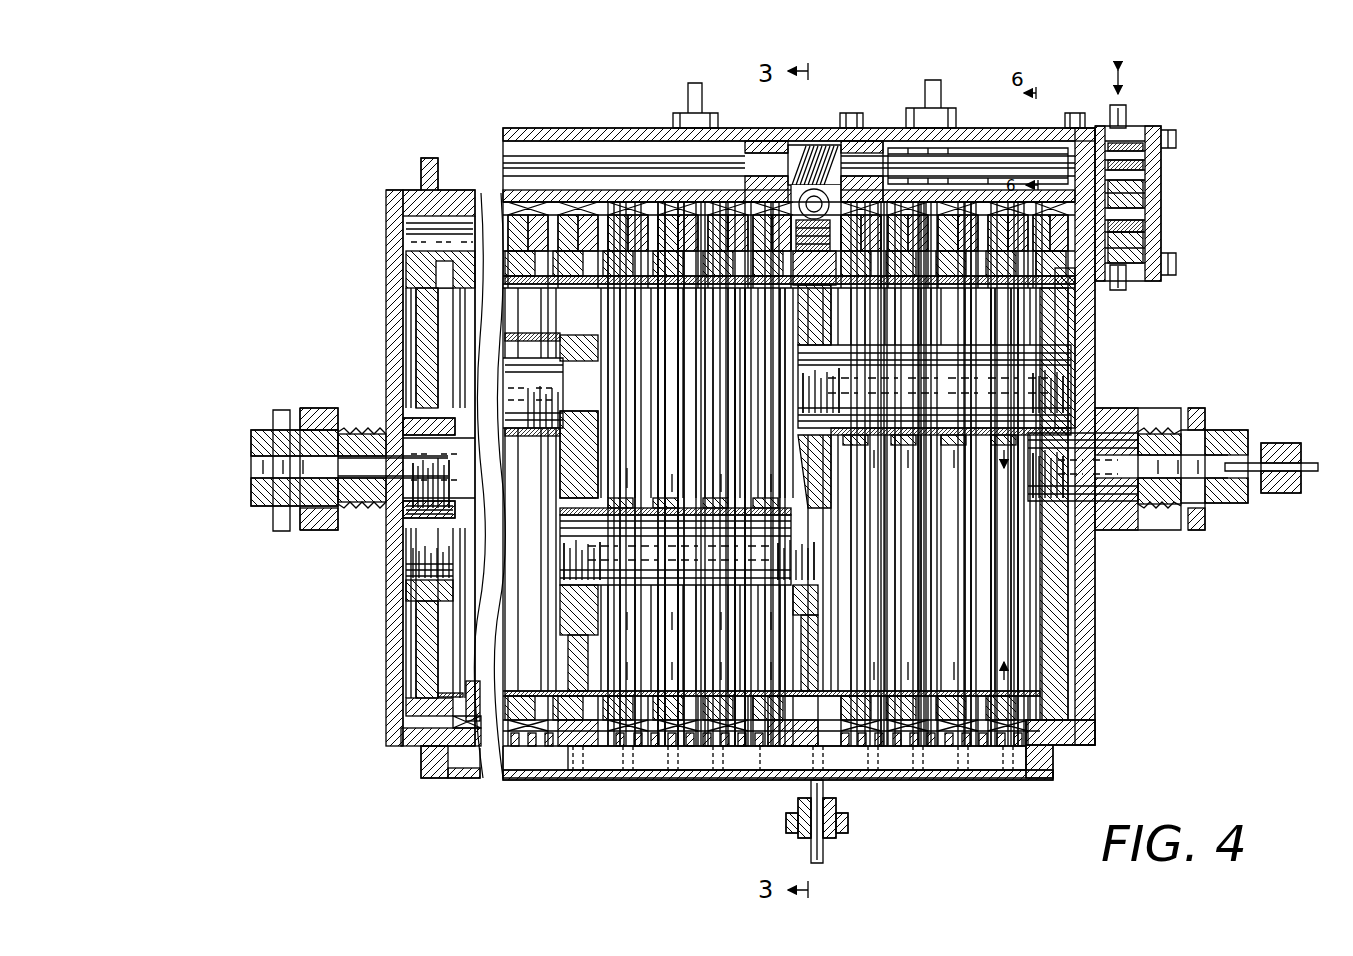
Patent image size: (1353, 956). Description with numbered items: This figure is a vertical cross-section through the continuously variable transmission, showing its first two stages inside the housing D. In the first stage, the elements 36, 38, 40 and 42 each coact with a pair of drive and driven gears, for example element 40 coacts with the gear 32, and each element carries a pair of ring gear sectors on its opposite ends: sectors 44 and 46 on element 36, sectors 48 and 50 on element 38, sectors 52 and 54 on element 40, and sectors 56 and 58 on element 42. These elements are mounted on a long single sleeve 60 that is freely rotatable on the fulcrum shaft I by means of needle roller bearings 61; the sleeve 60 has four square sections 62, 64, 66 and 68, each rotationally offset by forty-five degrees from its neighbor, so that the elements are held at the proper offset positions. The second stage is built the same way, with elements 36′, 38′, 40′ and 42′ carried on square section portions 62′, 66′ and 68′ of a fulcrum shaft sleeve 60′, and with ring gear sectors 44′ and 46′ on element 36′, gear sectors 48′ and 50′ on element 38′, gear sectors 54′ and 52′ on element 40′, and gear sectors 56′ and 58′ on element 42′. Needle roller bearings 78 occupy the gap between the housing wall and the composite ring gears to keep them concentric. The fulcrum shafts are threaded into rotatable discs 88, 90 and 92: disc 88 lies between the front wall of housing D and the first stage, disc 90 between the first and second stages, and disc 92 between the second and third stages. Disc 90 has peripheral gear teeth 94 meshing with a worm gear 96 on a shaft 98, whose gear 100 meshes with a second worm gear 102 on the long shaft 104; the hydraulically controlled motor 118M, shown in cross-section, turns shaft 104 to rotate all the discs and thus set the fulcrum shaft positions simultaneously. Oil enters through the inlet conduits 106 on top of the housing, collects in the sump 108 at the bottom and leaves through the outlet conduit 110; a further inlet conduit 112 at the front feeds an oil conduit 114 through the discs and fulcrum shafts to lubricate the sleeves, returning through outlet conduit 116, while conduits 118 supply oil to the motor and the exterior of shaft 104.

The gear 32 is at (915, 270).
The element 36 is at (1004, 474).
The element 38 is at (943, 288).
The element 40 is at (900, 290).
The element 42 is at (853, 330).
The ring gear sector 44 is at (1016, 246).
The ring gear sector 46 is at (1000, 740).
The ring gear sector 48 is at (960, 270).
The ring gear sector 50 is at (950, 737).
The ring gear sector 52 is at (655, 240).
The ring gear sector 54 is at (905, 737).
The ring gear sector 56 is at (878, 270).
The ring gear sector 58 is at (870, 737).
The sleeve 60 is at (990, 430).
The needle roller bearings 61 is at (1000, 432).
The square section 62 is at (1026, 285).
The square section 64 is at (953, 328).
The square section 66 is at (908, 328).
The square section 68 is at (860, 328).
The element 36′ is at (772, 284).
The element 38′ is at (716, 338).
The element 40′ is at (665, 338).
The element 42′ is at (615, 338).
The ring gear sector 44′ is at (752, 282).
The ring gear sector 46′ is at (765, 738).
The gear sector 48′ is at (710, 288).
The gear sector 50′ is at (712, 737).
The gear sector 52′ is at (658, 288).
The gear sector 54′ is at (672, 735).
The gear sector 56′ is at (624, 288).
The gear sector 58′ is at (630, 735).
The fulcrum shaft sleeve 60′ is at (734, 500).
The square section portion 62′ is at (735, 588).
The square section portion 66′ is at (668, 592).
The square section portion 68′ is at (628, 598).
The needle roller bearings 78 is at (1000, 722).
The rotatable disc 88 is at (1050, 634).
The rotatable disc 90 is at (820, 742).
The rotatable disc 92 is at (560, 755).
The peripheral gear teeth 94 is at (838, 225).
The worm gear 96 is at (850, 196).
The shaft 98 is at (797, 186).
The gear 100 is at (760, 172).
The worm gear 102 is at (814, 188).
The shaft 104 is at (976, 156).
The oil inlet conduits 106 is at (684, 92).
The oil reservoir or sump 108 is at (603, 752).
The oil outlet conduit 110 is at (812, 846).
The oil inlet conduit 112 is at (1290, 462).
The oil conduit 114 is at (365, 442).
The oil outlet conduit 116 is at (250, 456).
The conduits 118 is at (1118, 106).
The motor 118M is at (1140, 193).
The fulcrum shaft I is at (1066, 362).
The housing D is at (1096, 598).